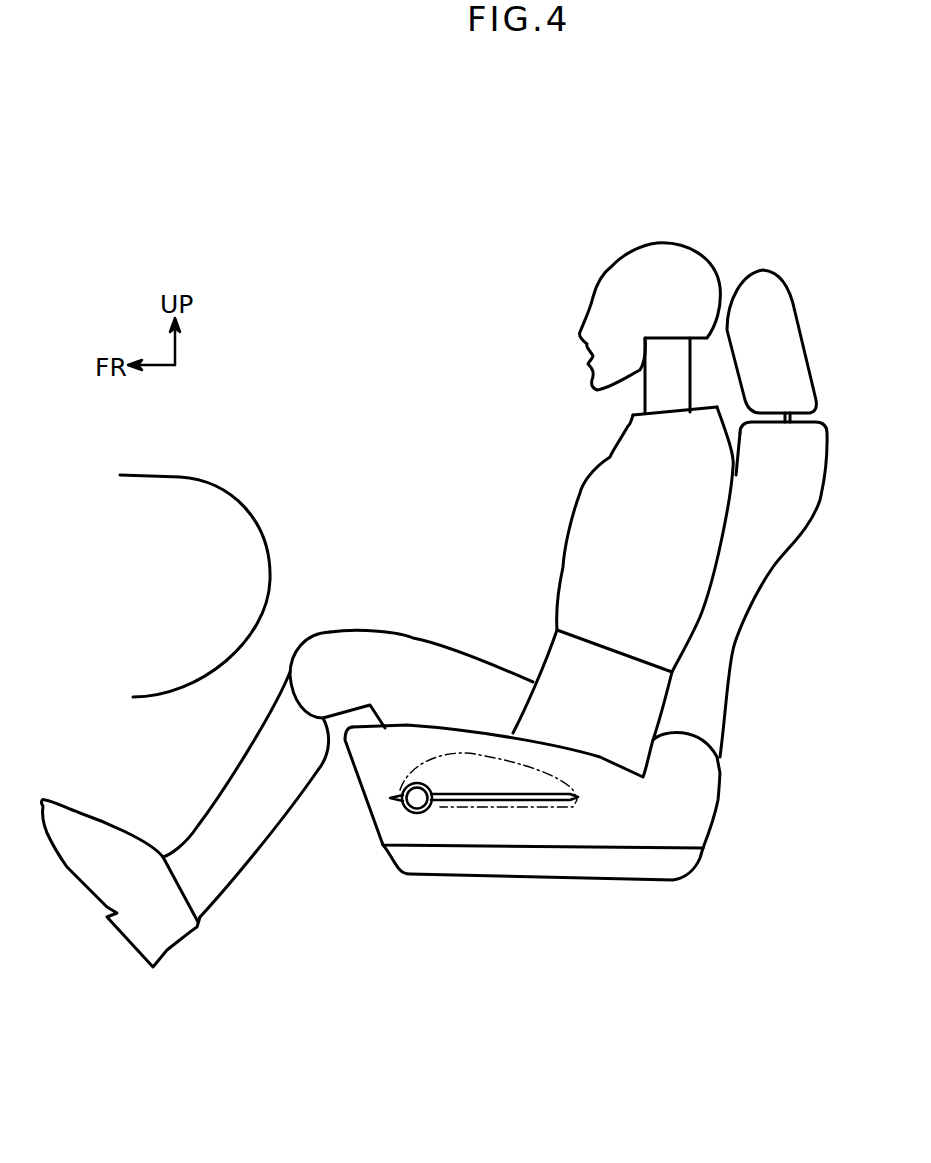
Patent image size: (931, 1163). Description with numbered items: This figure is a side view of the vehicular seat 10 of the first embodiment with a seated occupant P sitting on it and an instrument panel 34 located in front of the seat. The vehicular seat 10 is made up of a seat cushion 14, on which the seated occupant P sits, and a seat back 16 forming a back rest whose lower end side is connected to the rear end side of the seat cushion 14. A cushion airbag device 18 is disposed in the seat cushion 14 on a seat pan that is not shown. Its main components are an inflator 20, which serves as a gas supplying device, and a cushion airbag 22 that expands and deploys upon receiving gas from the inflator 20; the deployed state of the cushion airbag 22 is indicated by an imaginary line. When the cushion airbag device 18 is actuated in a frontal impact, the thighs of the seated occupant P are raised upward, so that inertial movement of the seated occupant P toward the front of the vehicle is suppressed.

The vehicular seat 10 is at (569, 599).
The seat cushion 14 is at (363, 755).
The seat back 16 is at (722, 603).
The cushion airbag device 18 is at (391, 812).
The inflator 20 is at (417, 798).
The cushion airbag 22 is at (503, 793).
The instrument panel 34 is at (167, 487).
The seated occupant P is at (569, 502).